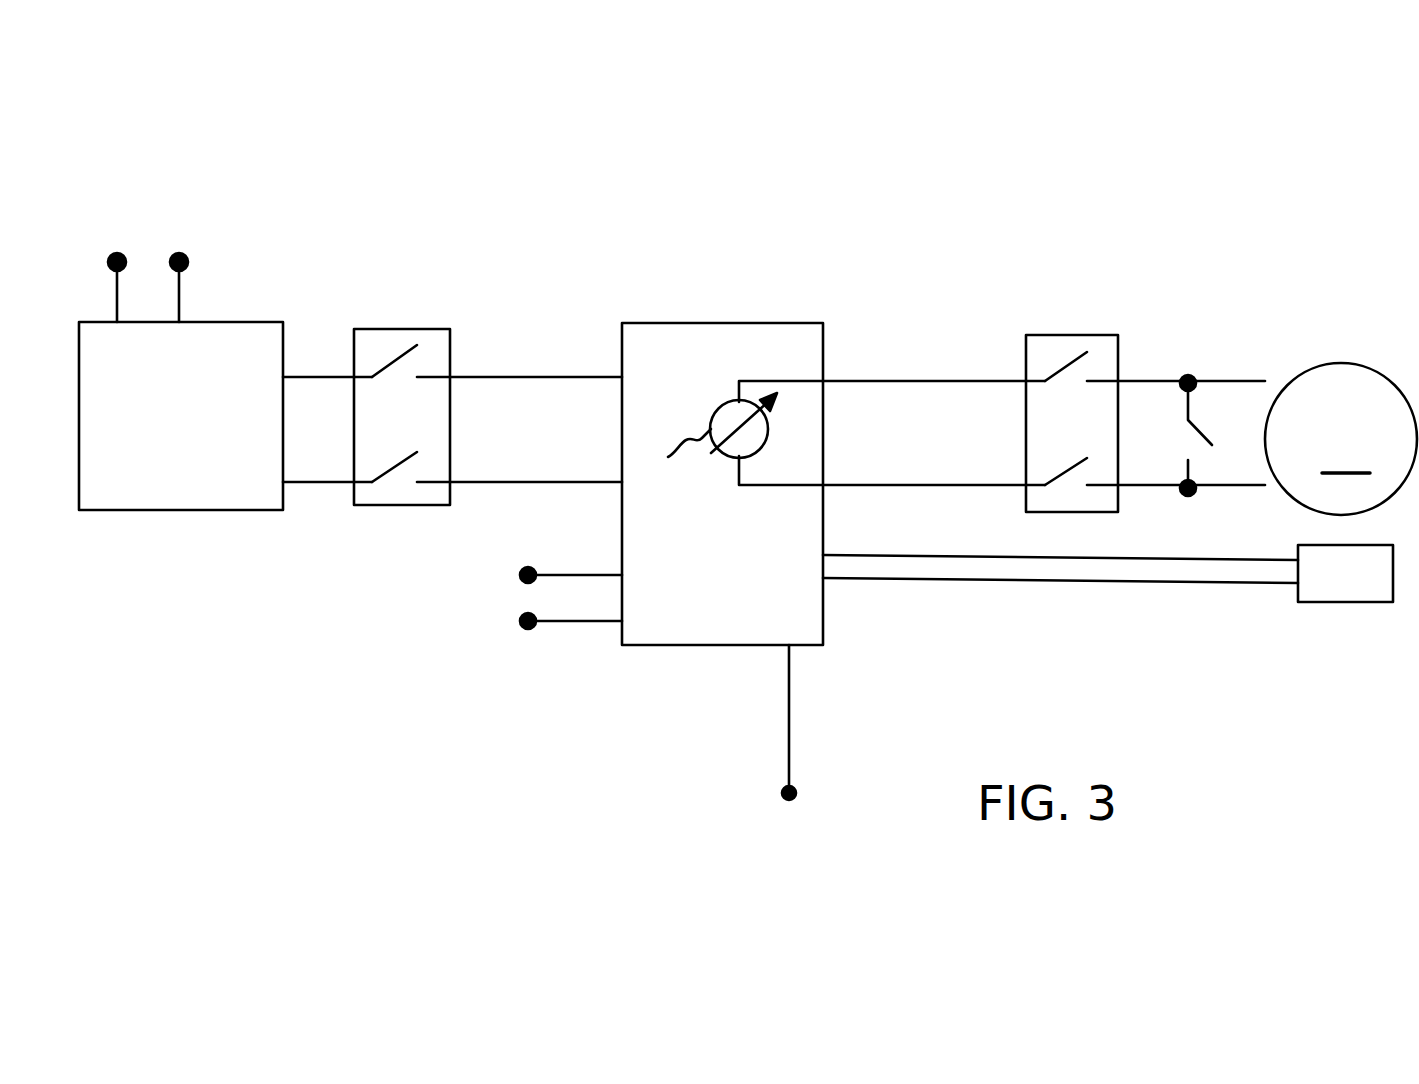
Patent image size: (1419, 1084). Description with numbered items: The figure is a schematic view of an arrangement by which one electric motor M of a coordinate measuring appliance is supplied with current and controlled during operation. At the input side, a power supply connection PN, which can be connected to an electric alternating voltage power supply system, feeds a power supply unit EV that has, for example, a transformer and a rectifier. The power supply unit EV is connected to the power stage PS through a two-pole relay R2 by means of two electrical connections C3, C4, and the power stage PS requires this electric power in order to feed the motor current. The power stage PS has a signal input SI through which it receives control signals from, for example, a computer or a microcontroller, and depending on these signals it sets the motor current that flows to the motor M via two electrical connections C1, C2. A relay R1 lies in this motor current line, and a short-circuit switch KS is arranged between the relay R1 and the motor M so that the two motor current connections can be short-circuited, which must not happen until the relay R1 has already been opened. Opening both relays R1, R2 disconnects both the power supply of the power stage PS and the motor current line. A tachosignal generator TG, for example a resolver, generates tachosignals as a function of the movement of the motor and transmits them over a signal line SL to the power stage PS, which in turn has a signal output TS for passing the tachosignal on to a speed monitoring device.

The power supply unit EV is at (124, 510).
The power supply connection PN is at (148, 243).
The two-pole relay R2 is at (406, 505).
The electrical connection C3 is at (498, 377).
The electrical connection C4 is at (503, 482).
The power stage PS is at (720, 645).
The signal input SI is at (512, 604).
The signal output TS is at (789, 748).
The electrical connection C1 is at (884, 381).
The electrical connection C2 is at (885, 485).
The relay R1 is at (1050, 335).
The short-circuit switch KS is at (1208, 427).
The electric motor M is at (1341, 439).
The signal line SL is at (997, 582).
The tachosignal generator TG is at (1352, 602).